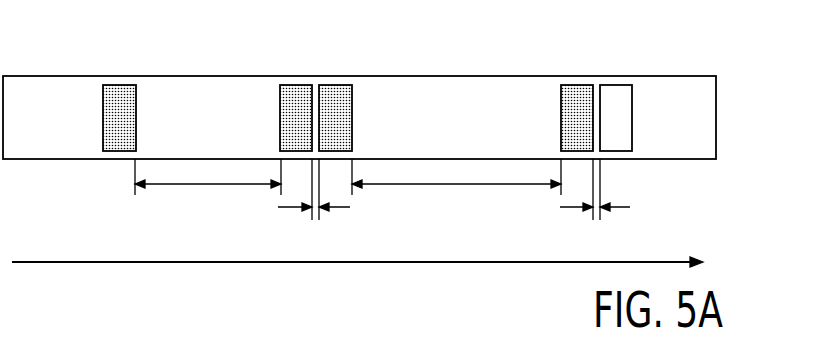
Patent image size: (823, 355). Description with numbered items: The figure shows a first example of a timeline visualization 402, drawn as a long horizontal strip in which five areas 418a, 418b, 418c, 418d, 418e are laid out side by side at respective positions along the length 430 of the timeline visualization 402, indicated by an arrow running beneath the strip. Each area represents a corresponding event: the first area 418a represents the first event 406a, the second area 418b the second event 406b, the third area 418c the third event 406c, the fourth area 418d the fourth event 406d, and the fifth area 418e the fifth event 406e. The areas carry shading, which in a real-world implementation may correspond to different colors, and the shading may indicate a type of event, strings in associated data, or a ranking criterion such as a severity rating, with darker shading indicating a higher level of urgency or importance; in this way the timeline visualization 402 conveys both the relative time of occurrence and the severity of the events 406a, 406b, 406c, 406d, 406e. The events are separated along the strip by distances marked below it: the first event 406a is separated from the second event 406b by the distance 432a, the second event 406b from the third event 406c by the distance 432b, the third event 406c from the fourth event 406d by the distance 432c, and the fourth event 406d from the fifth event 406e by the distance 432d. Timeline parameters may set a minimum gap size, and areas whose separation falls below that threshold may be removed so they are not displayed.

The timeline visualization 402 is at (716, 118).
The first event 406a is at (120, 84).
The second event 406b is at (296, 84).
The third event 406c is at (334, 84).
The fourth event 406d is at (577, 84).
The fifth event 406e is at (614, 84).
The first area 418a is at (98, 109).
The second area 418b is at (275, 109).
The third area 418c is at (358, 109).
The fourth area 418d is at (556, 109).
The fifth area 418e is at (639, 109).
The length of the timeline visualization 430 is at (182, 264).
The distance between first and second events 432a is at (208, 186).
The distance between second and third events 432b is at (281, 207).
The distance between third and fourth events 432c is at (456, 186).
The distance between fourth and fifth events 432d is at (560, 207).